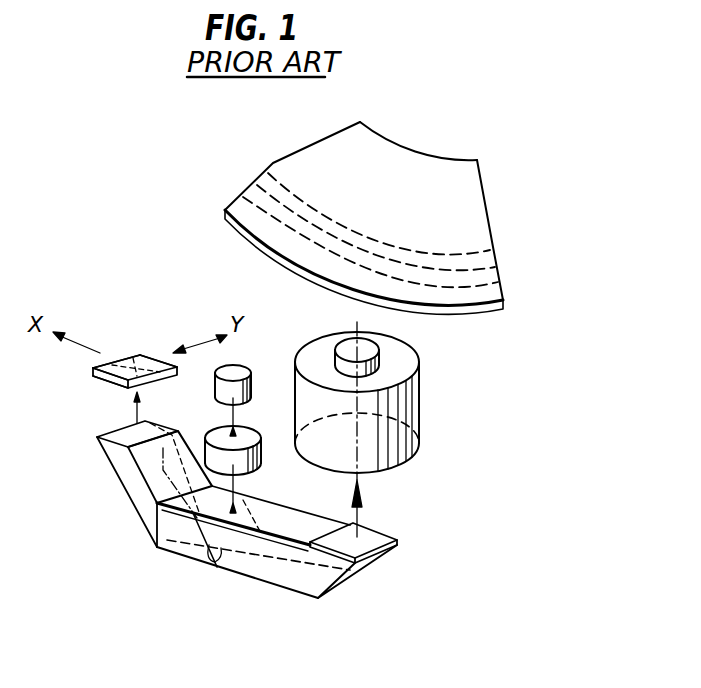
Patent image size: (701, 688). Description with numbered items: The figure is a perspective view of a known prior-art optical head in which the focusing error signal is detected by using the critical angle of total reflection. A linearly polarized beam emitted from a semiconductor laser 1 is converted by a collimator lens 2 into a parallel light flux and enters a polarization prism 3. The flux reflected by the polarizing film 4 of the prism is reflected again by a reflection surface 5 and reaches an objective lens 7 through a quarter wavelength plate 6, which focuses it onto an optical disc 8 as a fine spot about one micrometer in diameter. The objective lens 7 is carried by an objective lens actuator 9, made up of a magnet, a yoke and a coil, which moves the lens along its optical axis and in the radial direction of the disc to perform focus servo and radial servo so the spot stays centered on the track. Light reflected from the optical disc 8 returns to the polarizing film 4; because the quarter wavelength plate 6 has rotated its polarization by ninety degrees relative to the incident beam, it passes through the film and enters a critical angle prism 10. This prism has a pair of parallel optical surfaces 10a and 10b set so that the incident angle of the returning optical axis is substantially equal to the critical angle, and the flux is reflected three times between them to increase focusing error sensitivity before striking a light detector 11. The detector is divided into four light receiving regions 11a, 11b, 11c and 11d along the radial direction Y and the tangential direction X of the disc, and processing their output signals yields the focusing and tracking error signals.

The semiconductor laser 1 is at (245, 370).
The collimator lens 2 is at (248, 432).
The polarization prism 3 is at (285, 580).
The polarizing film 4 is at (213, 567).
The reflection surface 5 is at (343, 580).
The quarter wavelength plate 6 is at (383, 532).
The objective lens 7 is at (378, 355).
The optical disc 8 is at (493, 253).
The objective lens actuator 9 is at (417, 400).
The critical angle prism 10 is at (120, 498).
The optical surface 10a is at (143, 532).
The optical surface 10b is at (148, 453).
The light detector 11 is at (148, 338).
The light receiving region 11a is at (163, 360).
The light receiving region 11b is at (123, 382).
The light receiving region 11c is at (110, 365).
The light receiving region 11d is at (133, 357).